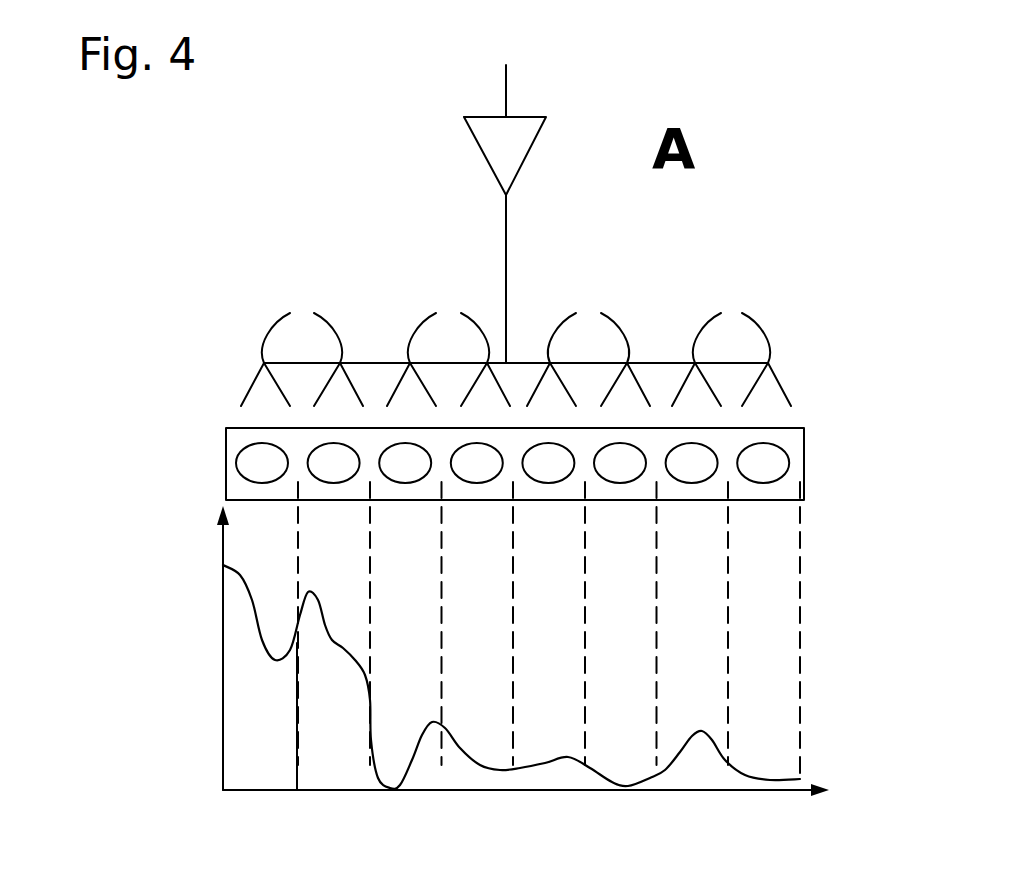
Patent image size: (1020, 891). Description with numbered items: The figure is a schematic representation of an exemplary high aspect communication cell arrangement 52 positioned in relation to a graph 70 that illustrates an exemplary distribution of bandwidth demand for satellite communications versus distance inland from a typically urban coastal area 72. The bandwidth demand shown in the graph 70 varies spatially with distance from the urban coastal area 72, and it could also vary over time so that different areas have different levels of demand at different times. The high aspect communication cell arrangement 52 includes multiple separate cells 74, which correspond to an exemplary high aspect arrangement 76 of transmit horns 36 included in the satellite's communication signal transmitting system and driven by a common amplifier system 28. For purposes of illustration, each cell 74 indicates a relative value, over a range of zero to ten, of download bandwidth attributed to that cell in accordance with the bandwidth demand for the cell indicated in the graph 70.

The common amplifier system 28 is at (535, 117).
The transmit horns 36 is at (516, 342).
The high aspect arrangement 76 is at (566, 342).
The high aspect communication cell arrangement 52 is at (524, 478).
The cells 74 is at (238, 470).
The urban coastal area 72 is at (270, 702).
The graph 70 is at (453, 736).